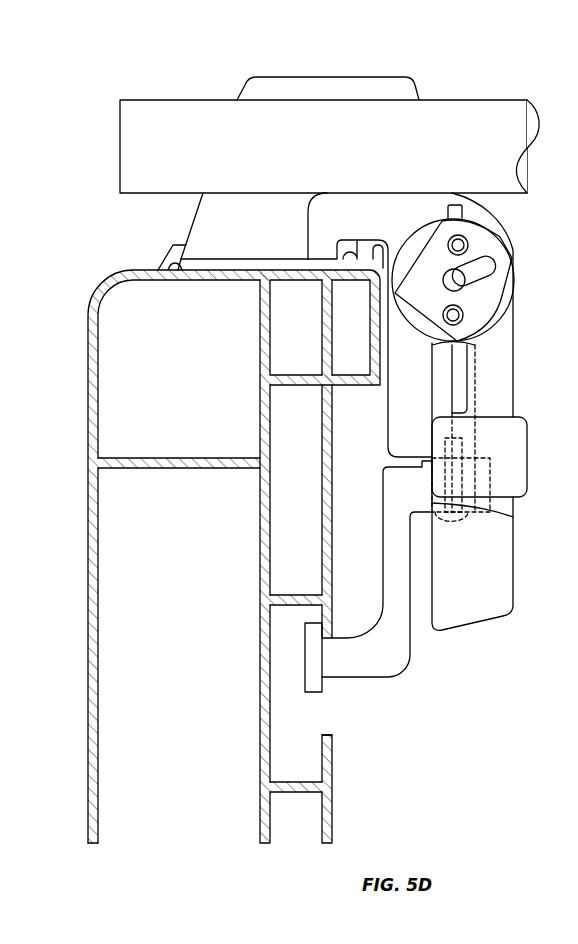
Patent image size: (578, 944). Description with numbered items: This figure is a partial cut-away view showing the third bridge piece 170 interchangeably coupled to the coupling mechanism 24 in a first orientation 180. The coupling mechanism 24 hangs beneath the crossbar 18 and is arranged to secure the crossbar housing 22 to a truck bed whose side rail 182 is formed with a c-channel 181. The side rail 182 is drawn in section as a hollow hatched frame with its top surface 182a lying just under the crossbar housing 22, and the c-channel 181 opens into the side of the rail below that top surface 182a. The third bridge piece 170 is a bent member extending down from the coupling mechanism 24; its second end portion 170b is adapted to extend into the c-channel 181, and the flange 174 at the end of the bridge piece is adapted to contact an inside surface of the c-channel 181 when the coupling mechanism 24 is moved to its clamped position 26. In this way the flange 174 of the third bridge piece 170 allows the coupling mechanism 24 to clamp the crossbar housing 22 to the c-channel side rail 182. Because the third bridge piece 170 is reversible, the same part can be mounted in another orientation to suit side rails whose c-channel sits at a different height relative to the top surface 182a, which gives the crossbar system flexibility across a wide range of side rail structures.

The crossbar 18 is at (460, 98).
The crossbar housing 22 is at (191, 226).
The coupling mechanism 24 is at (517, 397).
The clamped position 26 is at (485, 723).
The third bridge piece 170 is at (383, 678).
The second end portion 170b is at (337, 679).
The flange 174 is at (305, 686).
The first orientation 180 is at (428, 640).
The c-channel 181 is at (340, 723).
The side rail 182 is at (133, 270).
The top surface 182a is at (158, 268).